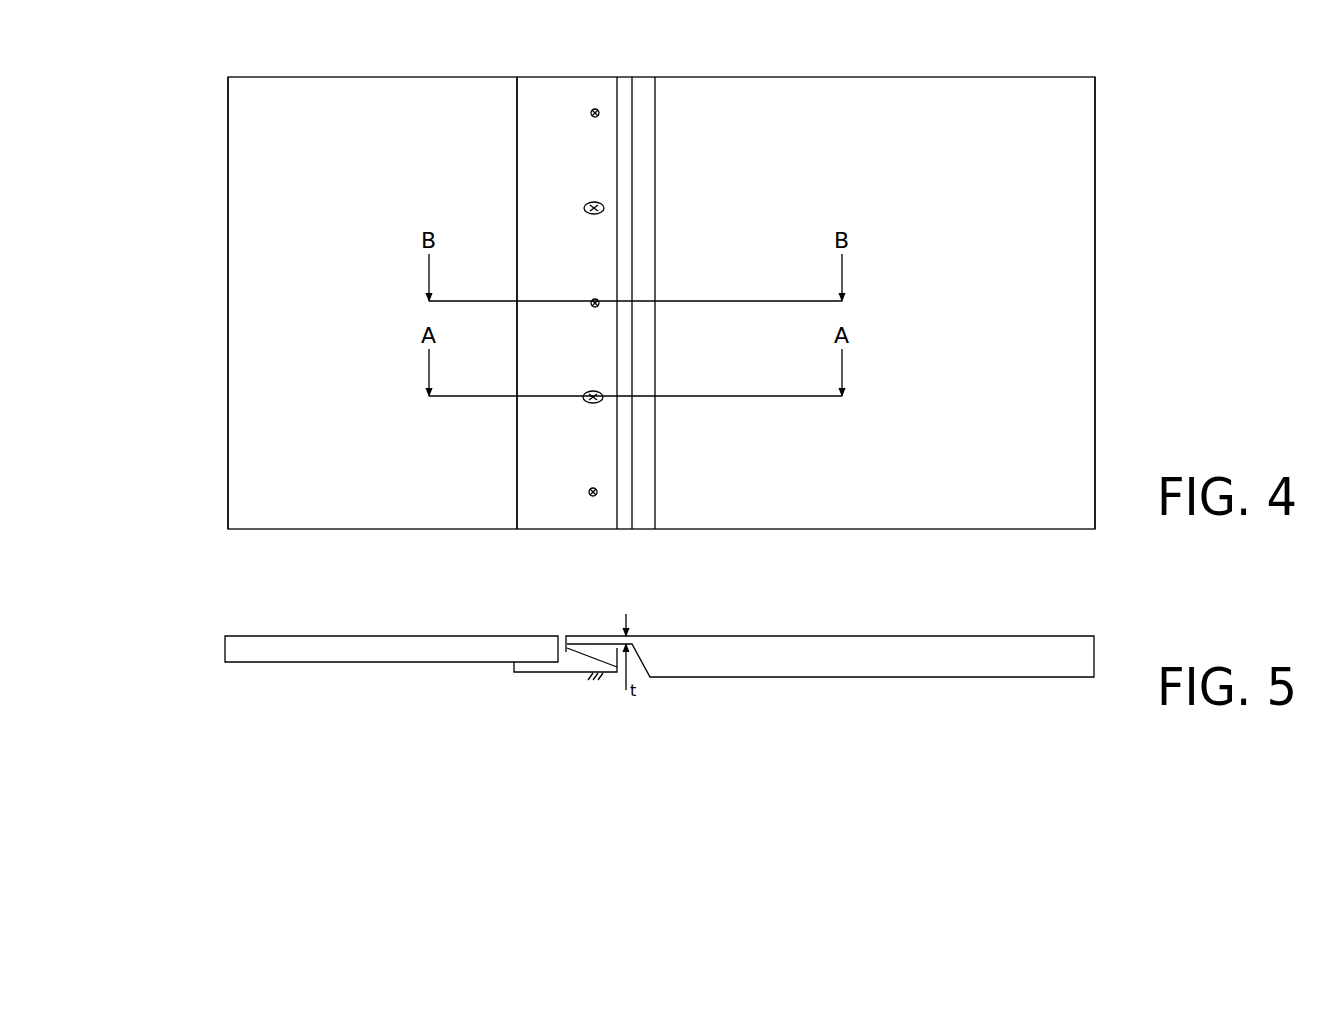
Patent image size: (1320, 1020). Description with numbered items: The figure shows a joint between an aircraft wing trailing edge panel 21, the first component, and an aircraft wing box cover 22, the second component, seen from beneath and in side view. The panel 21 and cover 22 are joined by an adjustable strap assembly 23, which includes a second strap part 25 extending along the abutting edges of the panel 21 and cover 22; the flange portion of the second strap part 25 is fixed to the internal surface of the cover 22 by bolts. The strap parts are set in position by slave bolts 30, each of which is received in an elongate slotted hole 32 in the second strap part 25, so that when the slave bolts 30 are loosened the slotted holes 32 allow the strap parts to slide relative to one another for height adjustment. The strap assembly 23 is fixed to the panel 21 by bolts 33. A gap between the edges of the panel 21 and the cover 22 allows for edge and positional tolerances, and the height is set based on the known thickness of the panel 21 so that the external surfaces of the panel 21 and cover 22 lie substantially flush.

In FIG. 4, the aircraft wing trailing edge panel 21 is at (1006, 304).
In FIG. 5, the aircraft wing trailing edge panel 21 is at (1008, 676).
In FIG. 4, the aircraft wing box cover 22 is at (333, 298).
In FIG. 5, the aircraft wing box cover 22 is at (323, 650).
In FIG. 5, the adjustable strap assembly 23 is at (541, 690).
In FIG. 4, the second strap part 25 is at (572, 169).
In FIG. 4, the slave bolt 30 is at (601, 216).
In FIG. 4, the elongate slotted hole 32 is at (583, 210).
In FIG. 5, the elongate slotted hole 32 is at (595, 676).
In FIG. 4, the bolt 33 is at (590, 113).